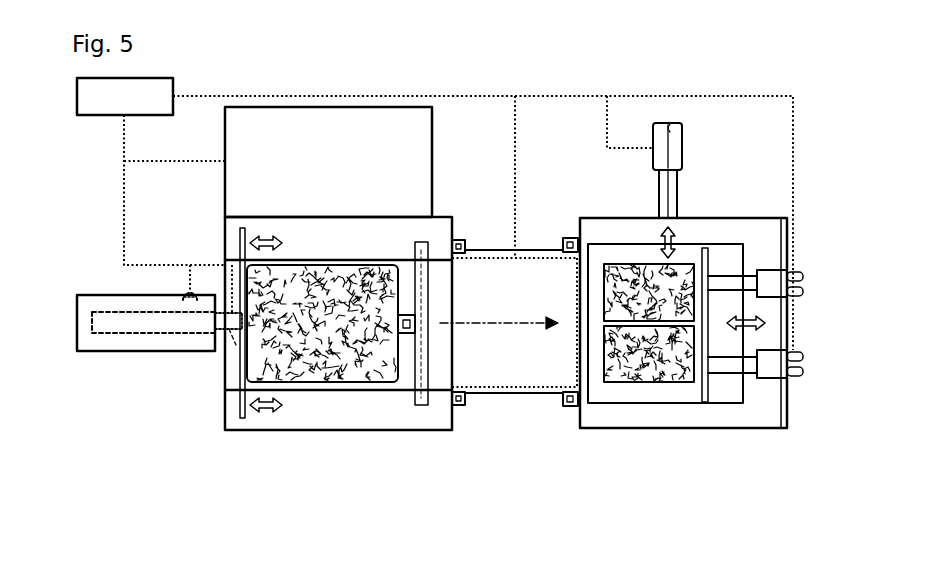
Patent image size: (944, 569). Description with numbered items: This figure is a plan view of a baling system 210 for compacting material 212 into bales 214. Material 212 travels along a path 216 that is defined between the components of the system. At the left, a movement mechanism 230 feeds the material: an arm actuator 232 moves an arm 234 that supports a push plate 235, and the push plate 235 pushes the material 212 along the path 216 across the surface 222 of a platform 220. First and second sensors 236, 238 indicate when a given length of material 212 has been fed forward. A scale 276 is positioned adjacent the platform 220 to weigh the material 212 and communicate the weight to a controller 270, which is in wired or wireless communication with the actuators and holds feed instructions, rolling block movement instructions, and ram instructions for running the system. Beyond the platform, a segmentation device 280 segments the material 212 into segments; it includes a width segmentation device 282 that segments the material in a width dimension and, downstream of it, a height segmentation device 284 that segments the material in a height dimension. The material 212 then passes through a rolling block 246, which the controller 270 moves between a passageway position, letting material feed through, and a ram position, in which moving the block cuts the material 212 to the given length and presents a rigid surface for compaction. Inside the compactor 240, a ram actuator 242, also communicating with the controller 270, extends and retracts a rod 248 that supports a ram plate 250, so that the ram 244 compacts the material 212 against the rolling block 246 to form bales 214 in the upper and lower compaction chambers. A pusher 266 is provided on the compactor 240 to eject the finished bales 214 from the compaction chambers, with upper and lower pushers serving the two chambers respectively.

The baling system 210 is at (702, 73).
The controller 270 is at (143, 108).
The scale 276 is at (341, 172).
The platform 220 is at (336, 424).
The surface 222 is at (401, 424).
The push plate 235 is at (240, 233).
The material 212 is at (300, 282).
The segmentation device 280 is at (407, 283).
The width segmentation device 282 is at (418, 335).
The height segmentation device 284 is at (428, 380).
The movement mechanism 230 is at (157, 317).
The arm actuator 232 is at (108, 351).
The arm 234 is at (226, 332).
The first sensor 236 is at (235, 347).
The second sensor 238 is at (187, 295).
The rolling block 246 is at (495, 250).
The path 216 is at (472, 320).
The pusher 266 is at (716, 163).
The compactor 240 is at (691, 356).
The bales 214 is at (640, 375).
The ram plate 250 is at (708, 262).
The rod 248 is at (722, 366).
The ram actuator 242 is at (793, 380).
The ram 244 is at (739, 408).